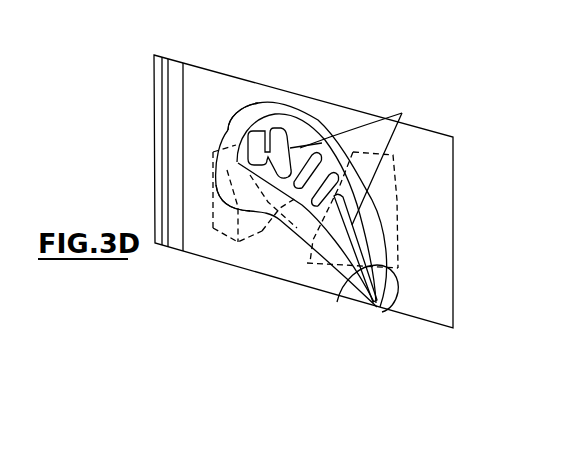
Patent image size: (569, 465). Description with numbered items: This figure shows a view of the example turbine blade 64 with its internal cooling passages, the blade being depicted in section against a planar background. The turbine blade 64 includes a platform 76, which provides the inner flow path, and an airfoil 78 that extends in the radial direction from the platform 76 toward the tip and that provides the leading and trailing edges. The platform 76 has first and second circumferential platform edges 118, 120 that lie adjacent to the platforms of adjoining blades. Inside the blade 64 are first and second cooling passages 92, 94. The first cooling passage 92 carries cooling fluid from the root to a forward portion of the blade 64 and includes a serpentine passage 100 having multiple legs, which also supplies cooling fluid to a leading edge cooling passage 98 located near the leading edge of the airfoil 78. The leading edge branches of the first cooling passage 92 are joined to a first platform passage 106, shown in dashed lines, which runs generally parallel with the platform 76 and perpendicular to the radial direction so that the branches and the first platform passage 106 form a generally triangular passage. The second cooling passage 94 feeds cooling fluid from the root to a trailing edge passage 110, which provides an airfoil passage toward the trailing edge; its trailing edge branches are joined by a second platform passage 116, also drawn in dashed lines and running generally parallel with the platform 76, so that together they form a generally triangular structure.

The turbine blade 64 is at (468, 167).
The platform 76 is at (352, 122).
The airfoil 78 is at (305, 124).
The first cooling passage 92 is at (202, 252).
The second cooling passage 94 is at (310, 259).
The leading edge cooling passage 98 is at (260, 140).
The serpentine passage 100 is at (372, 161).
The first platform passage 106 is at (235, 192).
The trailing edge passage 110 is at (360, 252).
The second platform passage 116 is at (374, 202).
The first circumferential platform edge 118 is at (258, 104).
The second circumferential platform edge 120 is at (230, 240).